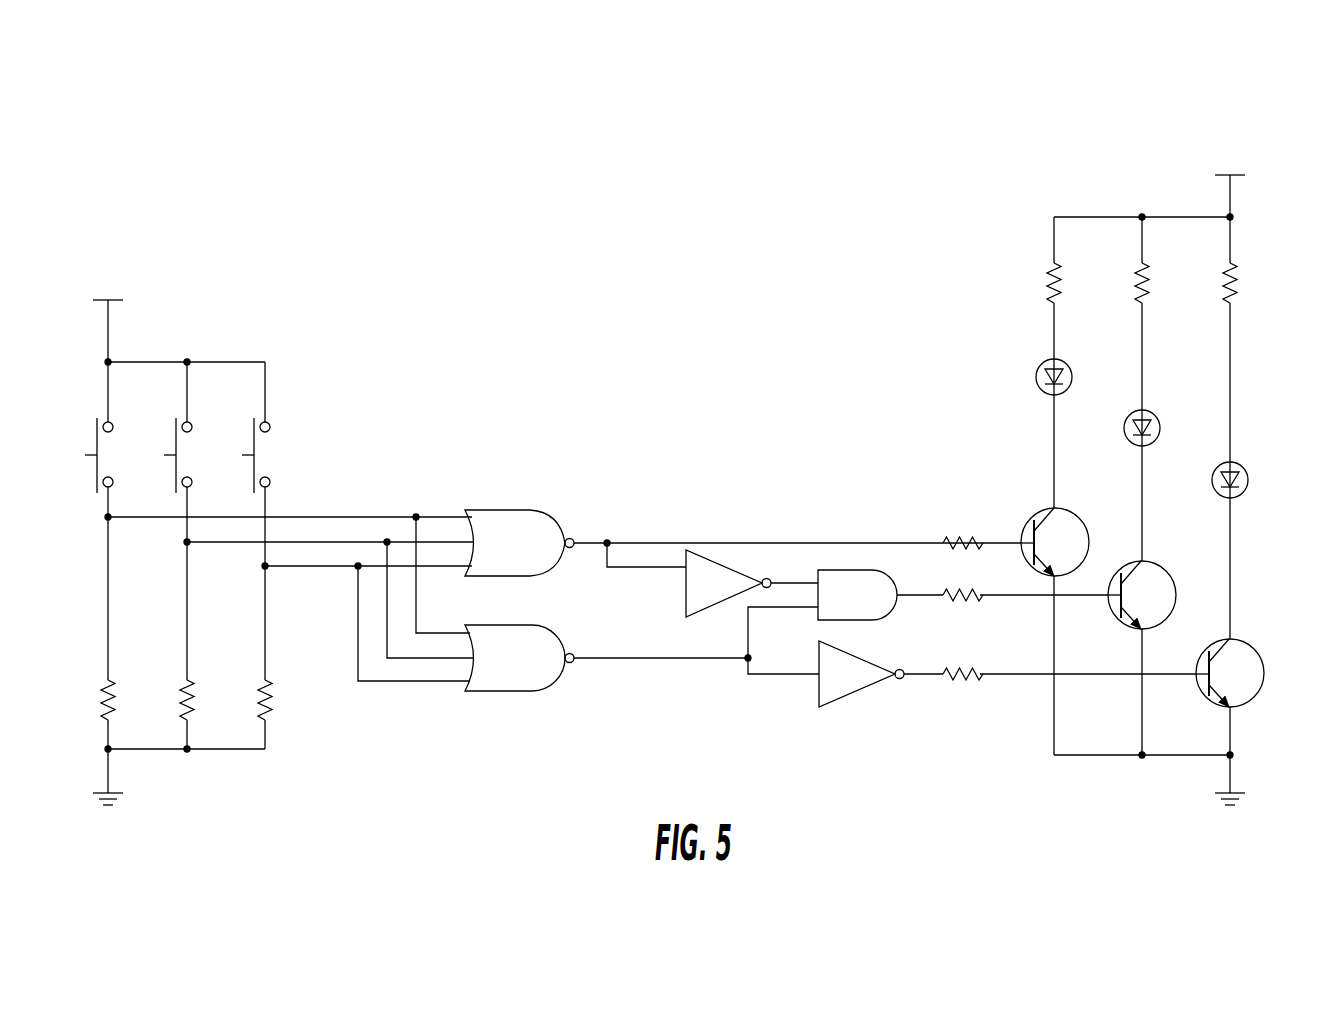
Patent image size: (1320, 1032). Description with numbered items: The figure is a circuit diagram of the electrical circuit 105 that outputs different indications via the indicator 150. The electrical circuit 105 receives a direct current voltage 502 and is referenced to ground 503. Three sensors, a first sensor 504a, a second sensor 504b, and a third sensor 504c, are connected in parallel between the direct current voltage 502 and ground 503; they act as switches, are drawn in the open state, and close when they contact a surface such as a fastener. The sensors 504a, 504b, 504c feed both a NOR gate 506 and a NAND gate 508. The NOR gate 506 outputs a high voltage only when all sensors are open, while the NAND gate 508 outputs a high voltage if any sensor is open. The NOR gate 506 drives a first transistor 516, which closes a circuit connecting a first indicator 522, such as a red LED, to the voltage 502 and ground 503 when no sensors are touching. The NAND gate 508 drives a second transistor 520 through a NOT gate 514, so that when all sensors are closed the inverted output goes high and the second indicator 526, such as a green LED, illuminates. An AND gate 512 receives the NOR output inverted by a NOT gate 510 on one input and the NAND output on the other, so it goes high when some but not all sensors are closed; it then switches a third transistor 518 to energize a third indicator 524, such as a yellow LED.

The electrical circuit 105 is at (672, 150).
The indicator 150 is at (903, 330).
The direct current voltage 502 is at (123, 258).
The ground 503 is at (137, 793).
The first sensor 504a is at (88, 420).
The second sensor 504b is at (192, 420).
The third sensor 504c is at (275, 418).
The NOR gate 506 is at (503, 505).
The NAND gate 508 is at (508, 692).
The NOT gate 510 is at (680, 588).
The AND gate 512 is at (850, 567).
The NOT gate 514 is at (855, 697).
The first transistor 516 is at (1078, 517).
The third transistor 518 is at (1163, 570).
The second transistor 520 is at (1252, 650).
The first indicator 522 is at (1072, 373).
The third indicator 524 is at (1160, 425).
The second indicator 526 is at (1248, 475).